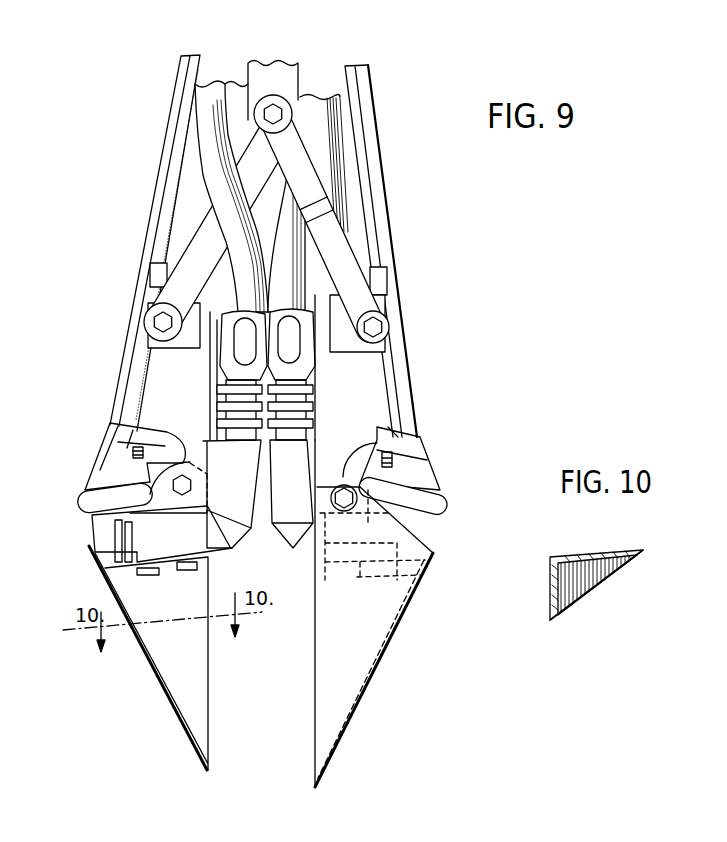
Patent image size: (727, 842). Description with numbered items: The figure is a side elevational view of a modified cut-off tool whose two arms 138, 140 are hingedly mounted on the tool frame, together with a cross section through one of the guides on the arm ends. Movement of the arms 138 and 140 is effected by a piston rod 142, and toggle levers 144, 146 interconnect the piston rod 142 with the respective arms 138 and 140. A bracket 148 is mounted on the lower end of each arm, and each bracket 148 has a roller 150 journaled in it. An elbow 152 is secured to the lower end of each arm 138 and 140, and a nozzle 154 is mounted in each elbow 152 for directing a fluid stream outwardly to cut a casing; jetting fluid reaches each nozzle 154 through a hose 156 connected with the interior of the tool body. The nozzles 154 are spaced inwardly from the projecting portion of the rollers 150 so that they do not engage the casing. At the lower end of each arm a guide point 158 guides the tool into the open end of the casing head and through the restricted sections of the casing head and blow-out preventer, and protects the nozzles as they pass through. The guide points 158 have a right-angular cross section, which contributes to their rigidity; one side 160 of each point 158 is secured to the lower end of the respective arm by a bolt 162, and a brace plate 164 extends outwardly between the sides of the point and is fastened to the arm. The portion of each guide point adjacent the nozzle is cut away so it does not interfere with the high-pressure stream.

In FIG. 9, the arm 138 is at (395, 245).
In FIG. 9, the arm 140 is at (152, 207).
In FIG. 9, the piston rod 142 is at (263, 70).
In FIG. 9, the toggle lever 144 is at (330, 236).
In FIG. 9, the toggle lever 146 is at (182, 262).
In FIG. 9, the bracket 148 is at (100, 470).
In FIG. 9, the roller 150 is at (82, 507).
In FIG. 9, the elbow 152 is at (276, 532).
In FIG. 9, the nozzle 154 is at (124, 530).
In FIG. 9, the hose 156 is at (195, 116).
In FIG. 9, the guide point 158 is at (166, 697).
In FIG. 10, the guide point 158 is at (592, 596).
In FIG. 9, the side of point 160 is at (187, 678).
In FIG. 10, the side of point 160 is at (598, 552).
In FIG. 9, the bolt 162 is at (182, 476).
In FIG. 9, the brace plate 164 is at (129, 572).